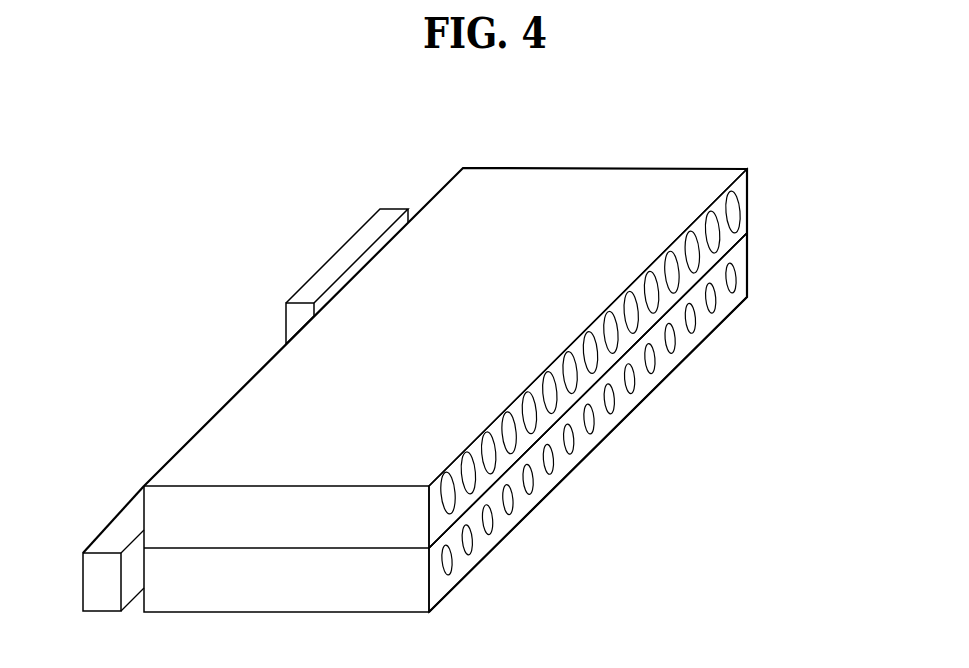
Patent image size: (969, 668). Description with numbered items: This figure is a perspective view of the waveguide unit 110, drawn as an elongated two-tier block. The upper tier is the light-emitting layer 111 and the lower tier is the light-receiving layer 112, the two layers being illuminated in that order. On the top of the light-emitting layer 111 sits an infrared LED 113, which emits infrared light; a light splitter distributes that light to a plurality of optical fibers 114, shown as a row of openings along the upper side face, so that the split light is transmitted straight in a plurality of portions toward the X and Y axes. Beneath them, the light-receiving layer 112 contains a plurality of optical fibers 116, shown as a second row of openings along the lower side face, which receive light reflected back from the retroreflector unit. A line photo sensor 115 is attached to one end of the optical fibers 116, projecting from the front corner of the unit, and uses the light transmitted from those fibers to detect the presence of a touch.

The waveguide unit 110 is at (855, 183).
The light-emitting layer 111 is at (742, 186).
The light-receiving layer 112 is at (742, 275).
The infrared LED 113 is at (322, 262).
The optical fibers 114 is at (682, 240).
The line photo sensor 115 is at (103, 525).
The optical fibers 116 is at (708, 287).